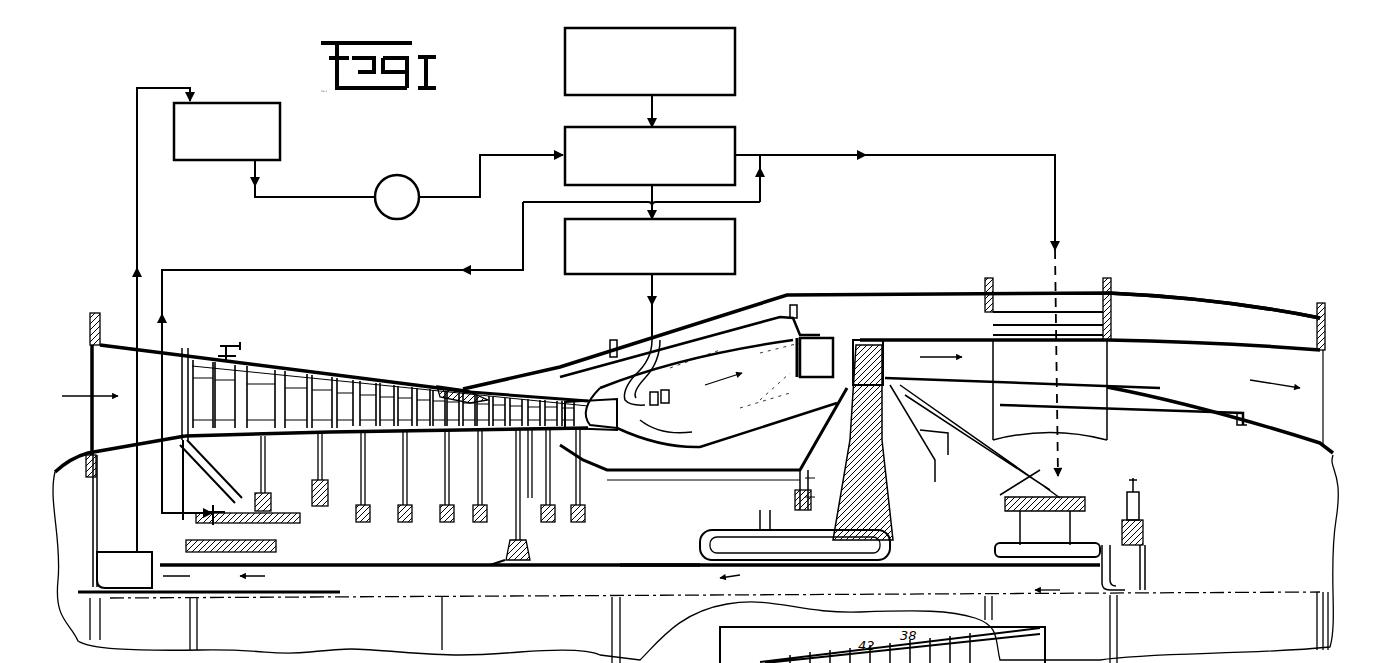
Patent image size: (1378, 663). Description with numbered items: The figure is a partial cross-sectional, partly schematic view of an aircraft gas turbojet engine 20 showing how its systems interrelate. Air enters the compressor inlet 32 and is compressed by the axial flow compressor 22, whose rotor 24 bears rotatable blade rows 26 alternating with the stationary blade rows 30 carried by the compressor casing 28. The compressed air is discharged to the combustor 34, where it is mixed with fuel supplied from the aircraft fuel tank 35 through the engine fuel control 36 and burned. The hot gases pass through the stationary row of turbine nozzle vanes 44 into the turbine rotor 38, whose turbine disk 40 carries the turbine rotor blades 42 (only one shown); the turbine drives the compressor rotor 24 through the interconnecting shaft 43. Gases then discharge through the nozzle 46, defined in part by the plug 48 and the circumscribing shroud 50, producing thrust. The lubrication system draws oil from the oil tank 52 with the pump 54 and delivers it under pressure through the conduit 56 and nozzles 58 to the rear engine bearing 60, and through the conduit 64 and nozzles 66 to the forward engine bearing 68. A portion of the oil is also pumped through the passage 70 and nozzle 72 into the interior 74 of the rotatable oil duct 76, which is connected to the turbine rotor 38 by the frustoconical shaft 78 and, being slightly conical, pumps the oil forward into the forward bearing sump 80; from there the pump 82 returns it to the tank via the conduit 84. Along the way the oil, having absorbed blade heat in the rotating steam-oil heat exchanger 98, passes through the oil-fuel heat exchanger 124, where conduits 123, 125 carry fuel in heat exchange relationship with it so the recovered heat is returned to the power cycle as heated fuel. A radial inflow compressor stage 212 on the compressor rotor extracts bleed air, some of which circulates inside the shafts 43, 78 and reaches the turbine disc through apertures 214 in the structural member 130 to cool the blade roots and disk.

The aircraft gas turbojet engine 20 is at (385, 382).
The axial flow compressor 22 is at (317, 368).
The compressor rotor 24 is at (420, 505).
The rotatable blade rows 26 is at (370, 376).
The compressor casing 28 is at (262, 353).
The stationary blade rows 30 is at (416, 380).
The compressor inlet 32 is at (90, 372).
The combustor 34 is at (716, 406).
The aircraft fuel tank 35 is at (735, 74).
The engine fuel control 36 is at (735, 240).
The turbine rotor 38 is at (1076, 409).
The turbine disk 40 is at (892, 470).
The turbine rotor blades 42 is at (1090, 356).
The interconnecting shaft 43 is at (680, 472).
The turbine nozzle vanes 44 is at (815, 357).
The nozzle 46 is at (1323, 385).
The plug 48 is at (1287, 427).
The shroud 50 is at (1217, 347).
The oil tank 52 is at (280, 140).
The pump 54 is at (413, 188).
The conduit 56 is at (955, 156).
The nozzles 58 is at (1075, 500).
The rear engine bearing 60 is at (1012, 572).
The conduit 64 is at (430, 272).
The nozzles 66 is at (210, 524).
The forward engine bearing 68 is at (262, 541).
The passage 70 is at (1060, 450).
The nozzle 72 is at (1130, 595).
The interior of oil duct 74 is at (803, 592).
The rotatable oil duct 76 is at (660, 565).
The frustoconical shaft 78 is at (965, 530).
The forward bearing sump 80 is at (165, 592).
The pump 82 is at (122, 552).
The conduit 84 is at (137, 196).
The heat exchanger 98 is at (775, 578).
The conduit 123 is at (650, 110).
The heat exchanger 124 is at (727, 127).
The conduit 125 is at (650, 196).
The structural member 130 is at (800, 497).
The radial inflow compressor stage 212 is at (529, 500).
The apertures 214 is at (800, 483).